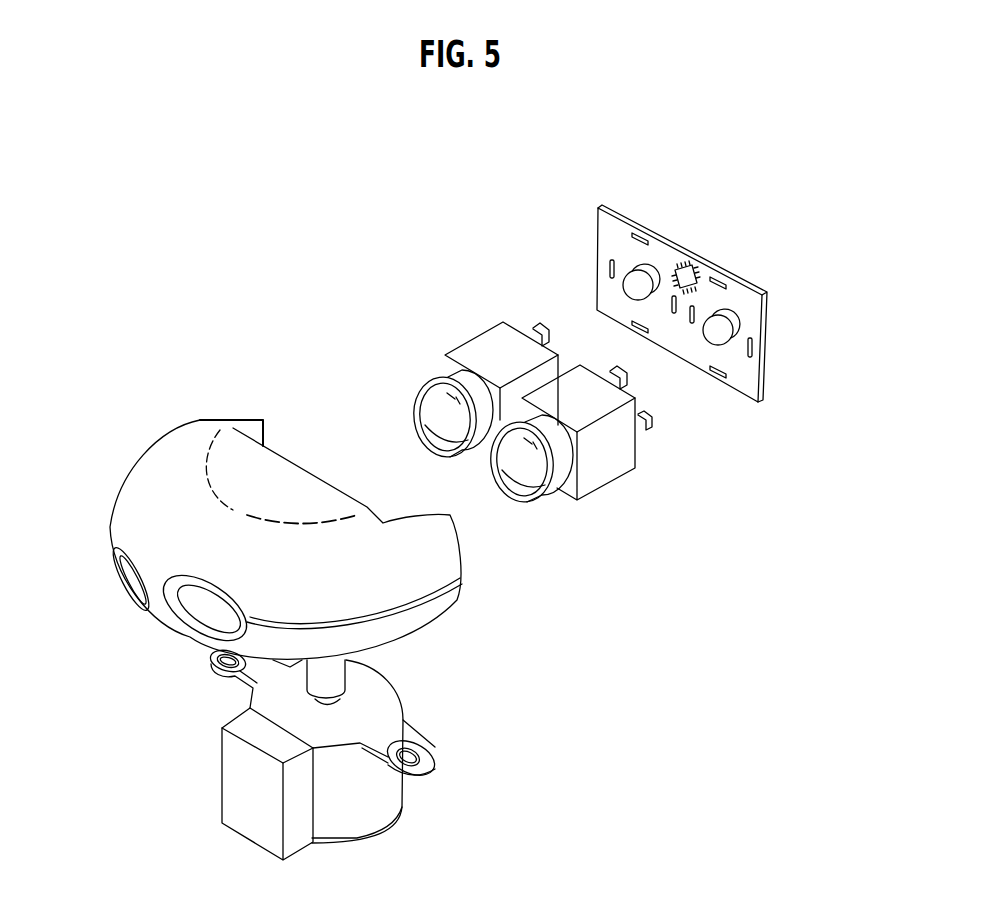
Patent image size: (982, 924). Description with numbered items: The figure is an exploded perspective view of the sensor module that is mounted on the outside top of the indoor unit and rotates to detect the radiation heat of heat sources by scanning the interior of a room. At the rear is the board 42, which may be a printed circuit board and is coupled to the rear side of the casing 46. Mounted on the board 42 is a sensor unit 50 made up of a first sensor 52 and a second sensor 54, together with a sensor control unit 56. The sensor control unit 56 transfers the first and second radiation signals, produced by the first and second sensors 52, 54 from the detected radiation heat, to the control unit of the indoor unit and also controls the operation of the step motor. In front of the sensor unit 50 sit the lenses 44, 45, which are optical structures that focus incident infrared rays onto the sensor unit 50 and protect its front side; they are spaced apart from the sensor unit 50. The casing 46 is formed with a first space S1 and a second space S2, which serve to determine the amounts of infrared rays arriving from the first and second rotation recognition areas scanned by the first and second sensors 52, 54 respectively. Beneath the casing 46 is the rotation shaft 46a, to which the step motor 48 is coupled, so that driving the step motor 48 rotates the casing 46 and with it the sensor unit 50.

The board 42 is at (750, 372).
The sensor unit 50 is at (696, 254).
The first sensor 52 is at (717, 327).
The second sensor 54 is at (637, 282).
The sensor control unit 56 is at (685, 272).
The lens 44 is at (450, 423).
The lens 45 is at (528, 472).
The casing 46 is at (239, 546).
The first space S1 is at (118, 573).
The second space S2 is at (197, 617).
The rotation shaft 46a is at (328, 705).
The step motor 48 is at (367, 805).